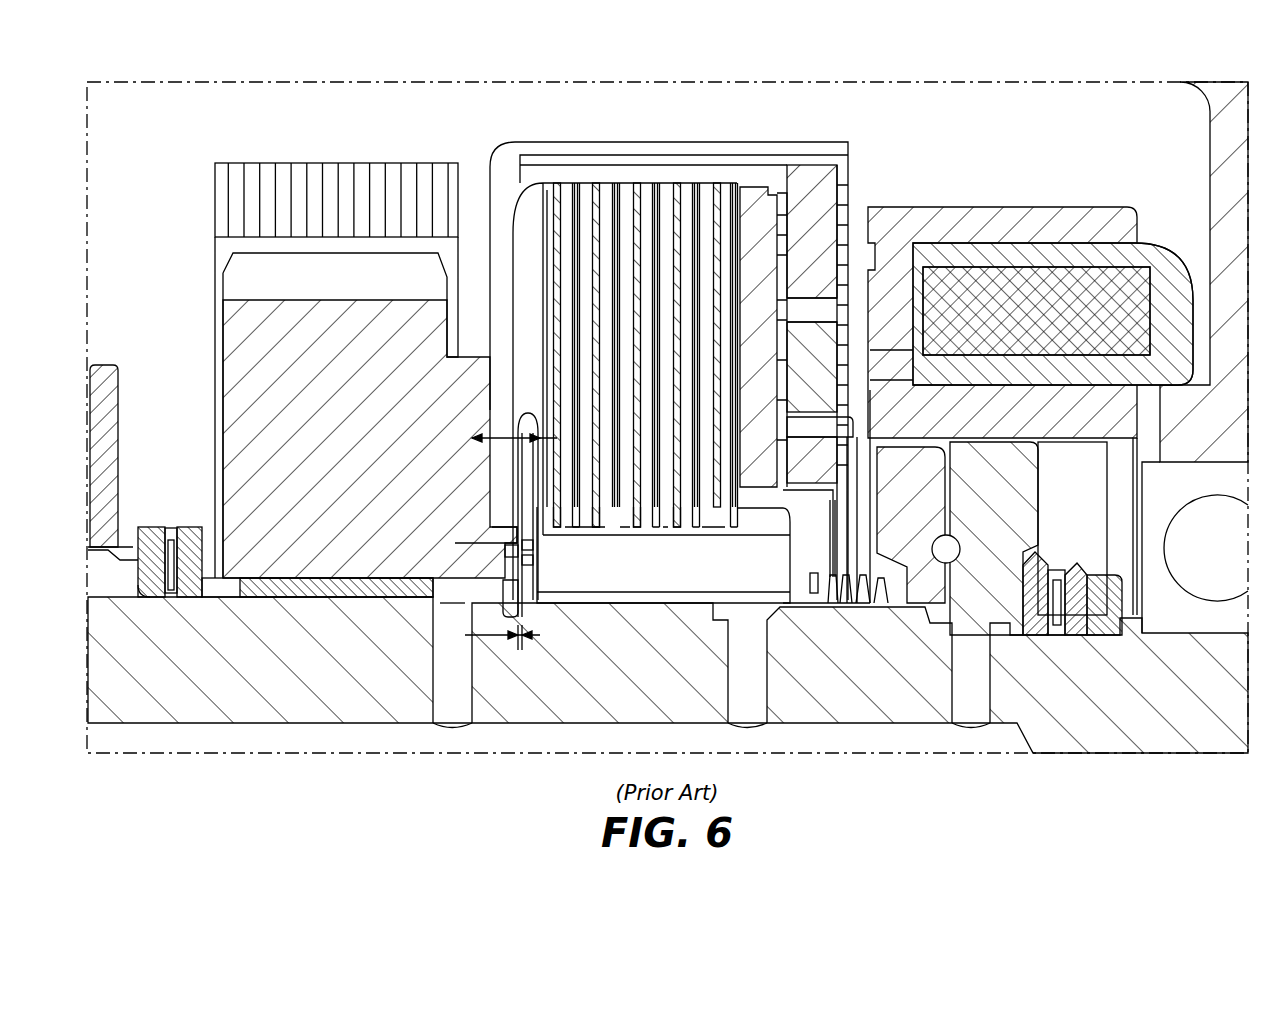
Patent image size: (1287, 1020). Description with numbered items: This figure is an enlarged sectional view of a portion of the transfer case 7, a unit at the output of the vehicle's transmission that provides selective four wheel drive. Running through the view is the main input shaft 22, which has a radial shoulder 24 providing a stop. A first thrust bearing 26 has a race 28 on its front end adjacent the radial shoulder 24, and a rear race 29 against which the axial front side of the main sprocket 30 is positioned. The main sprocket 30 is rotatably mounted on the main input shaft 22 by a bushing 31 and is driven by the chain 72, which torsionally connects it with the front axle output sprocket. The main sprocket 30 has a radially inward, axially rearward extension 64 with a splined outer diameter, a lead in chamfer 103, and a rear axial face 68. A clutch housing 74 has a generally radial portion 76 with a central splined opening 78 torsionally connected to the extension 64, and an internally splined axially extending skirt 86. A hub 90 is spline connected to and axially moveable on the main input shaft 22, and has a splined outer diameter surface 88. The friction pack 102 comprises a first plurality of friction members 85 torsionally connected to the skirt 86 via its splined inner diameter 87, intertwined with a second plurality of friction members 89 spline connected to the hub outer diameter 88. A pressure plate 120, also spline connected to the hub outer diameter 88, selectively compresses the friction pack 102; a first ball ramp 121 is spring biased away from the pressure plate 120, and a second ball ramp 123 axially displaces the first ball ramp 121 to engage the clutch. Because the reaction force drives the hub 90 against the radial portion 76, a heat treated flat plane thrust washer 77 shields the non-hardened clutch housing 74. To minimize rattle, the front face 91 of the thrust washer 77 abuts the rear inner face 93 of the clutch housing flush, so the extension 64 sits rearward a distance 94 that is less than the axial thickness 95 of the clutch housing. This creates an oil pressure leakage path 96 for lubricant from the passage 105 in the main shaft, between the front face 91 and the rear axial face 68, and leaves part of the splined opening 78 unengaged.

The transfer case 7 is at (938, 130).
The main input shaft 22 is at (1230, 703).
The radial shoulder 24 is at (148, 580).
The first thrust bearing 26 is at (167, 528).
The race 28 is at (150, 527).
The rear race 29 is at (190, 527).
The main sprocket 30 is at (445, 268).
The bushing 31 is at (318, 584).
The extension 64 is at (470, 585).
The rear axial face 68 is at (520, 560).
The chain 72 is at (318, 160).
The clutch housing 74 is at (848, 142).
The radial portion 76 is at (513, 313).
The flat plane thrust washer 77 is at (535, 483).
The central splined opening 78 is at (510, 532).
The first plurality of friction members 85 is at (557, 197).
The skirt 86 is at (711, 142).
The splined inner diameter 87 is at (742, 190).
The splined outer diameter surface 88 is at (782, 500).
The second plurality of friction members 89 is at (712, 513).
The hub 90 is at (785, 563).
The front face 91 is at (520, 495).
The rear inner face 93 is at (528, 470).
The distance 94 is at (490, 637).
The axial thickness 95 is at (472, 438).
The oil pressure leakage path 96 is at (513, 547).
The friction pack 102 is at (655, 197).
The lead in chamfer 103 is at (522, 530).
The passage 105 is at (448, 708).
The pressure plate 120 is at (758, 190).
The first ball ramp 121 is at (900, 443).
The second ball ramp 123 is at (1010, 630).